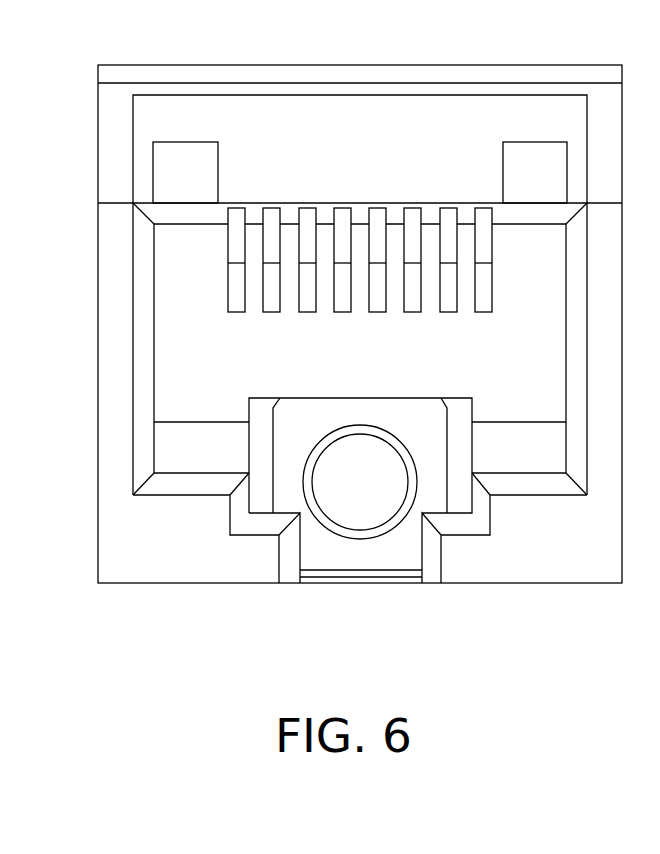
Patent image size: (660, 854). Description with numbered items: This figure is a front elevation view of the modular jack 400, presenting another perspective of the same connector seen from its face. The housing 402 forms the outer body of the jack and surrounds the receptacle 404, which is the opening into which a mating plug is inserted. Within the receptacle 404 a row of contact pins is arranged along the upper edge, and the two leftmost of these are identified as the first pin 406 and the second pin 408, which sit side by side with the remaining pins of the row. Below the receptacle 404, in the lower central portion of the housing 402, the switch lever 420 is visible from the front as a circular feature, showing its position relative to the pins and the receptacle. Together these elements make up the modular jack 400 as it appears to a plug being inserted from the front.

The modular jack 400 is at (572, 65).
The housing 402 is at (108, 255).
The receptacle 404 is at (143, 392).
The Pin 1 406 is at (237, 312).
The Pin 2 408 is at (268, 312).
The switch lever 420 is at (380, 527).